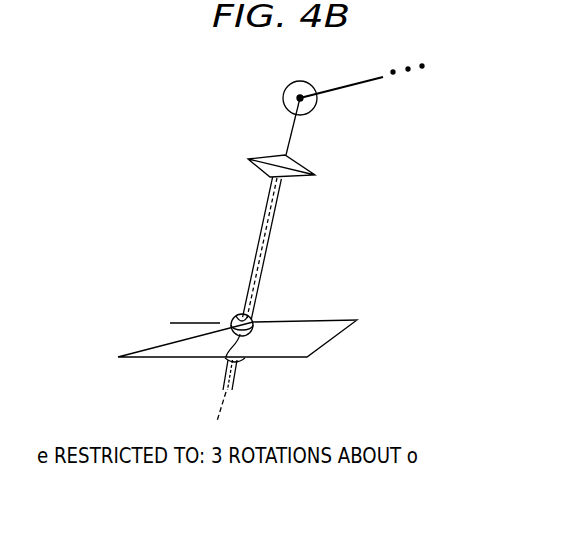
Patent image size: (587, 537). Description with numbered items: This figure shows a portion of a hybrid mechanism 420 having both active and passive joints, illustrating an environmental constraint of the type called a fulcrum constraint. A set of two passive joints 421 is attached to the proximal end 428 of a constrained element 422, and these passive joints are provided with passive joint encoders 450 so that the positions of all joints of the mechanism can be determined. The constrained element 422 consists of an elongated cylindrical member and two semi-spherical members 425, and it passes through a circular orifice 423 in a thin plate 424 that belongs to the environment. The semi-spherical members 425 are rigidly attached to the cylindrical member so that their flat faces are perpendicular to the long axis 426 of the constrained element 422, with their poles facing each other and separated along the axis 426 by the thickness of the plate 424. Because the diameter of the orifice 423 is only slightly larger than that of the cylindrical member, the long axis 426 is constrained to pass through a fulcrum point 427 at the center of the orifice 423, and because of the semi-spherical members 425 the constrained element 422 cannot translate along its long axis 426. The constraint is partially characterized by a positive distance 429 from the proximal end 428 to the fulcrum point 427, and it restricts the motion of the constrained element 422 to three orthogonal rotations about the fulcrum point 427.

The kinematic mechanism 420 is at (177, 88).
The passive joints 421 is at (262, 68).
The passive joint encoders 450 is at (292, 161).
The proximal end 428 is at (282, 182).
The positive distance 429 is at (262, 179).
The circular orifice 423 is at (255, 318).
The thin plate 424 is at (170, 333).
The fulcrum point 427 is at (225, 353).
The semi-spherical members 425 is at (247, 362).
The constrained element 422 is at (222, 382).
The long axis 426 is at (220, 408).